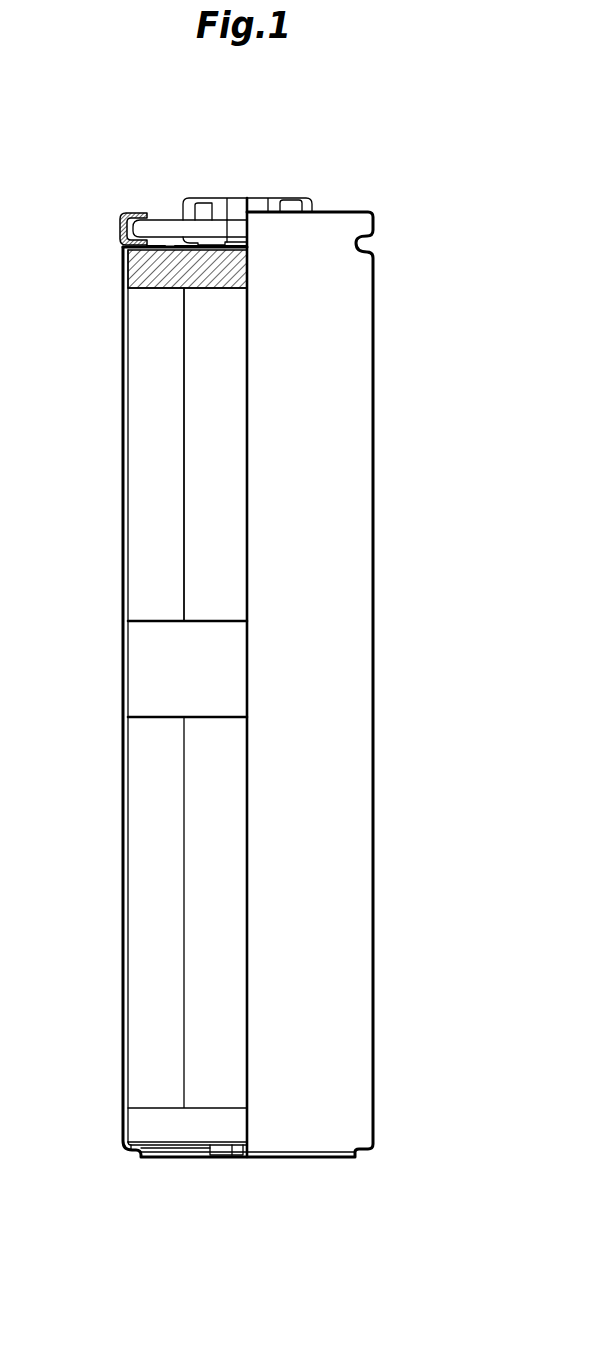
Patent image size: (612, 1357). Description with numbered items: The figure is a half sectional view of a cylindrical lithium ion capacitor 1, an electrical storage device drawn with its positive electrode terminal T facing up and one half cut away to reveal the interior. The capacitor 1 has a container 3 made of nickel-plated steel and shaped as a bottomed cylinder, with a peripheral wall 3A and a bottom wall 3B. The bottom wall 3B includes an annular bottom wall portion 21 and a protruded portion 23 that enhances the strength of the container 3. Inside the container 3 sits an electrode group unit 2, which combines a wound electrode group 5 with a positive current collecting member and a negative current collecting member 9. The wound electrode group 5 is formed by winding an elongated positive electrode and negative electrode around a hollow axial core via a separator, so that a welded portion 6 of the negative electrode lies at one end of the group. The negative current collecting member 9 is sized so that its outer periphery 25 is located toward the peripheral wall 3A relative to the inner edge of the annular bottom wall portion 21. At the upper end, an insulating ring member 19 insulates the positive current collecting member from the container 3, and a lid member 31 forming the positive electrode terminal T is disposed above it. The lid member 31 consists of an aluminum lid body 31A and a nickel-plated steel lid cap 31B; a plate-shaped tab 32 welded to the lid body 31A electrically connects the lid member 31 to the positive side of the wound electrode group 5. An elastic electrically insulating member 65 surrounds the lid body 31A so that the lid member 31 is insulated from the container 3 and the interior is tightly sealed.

The cylindrical lithium ion capacitor 1 is at (362, 198).
The electrode group unit 2 is at (150, 341).
The container 3 is at (355, 458).
The peripheral wall 3A is at (122, 425).
The bottom wall 3B is at (161, 1158).
The wound electrode group 5 is at (148, 378).
The welded portion of the negative electrode 6 is at (232, 1146).
The negative current collecting member 9 is at (190, 1146).
The insulating ring member 19 is at (147, 272).
The annular bottom wall portion 21 is at (128, 1158).
The protruded portion 23 is at (215, 1158).
The outer periphery 25 is at (122, 1140).
The lid member 31 is at (163, 222).
The lid body 31A is at (178, 232).
The lid cap 31B is at (263, 205).
The tab 32 is at (226, 232).
The electrically insulating member 65 is at (123, 215).
The positive electrode terminal T is at (237, 215).